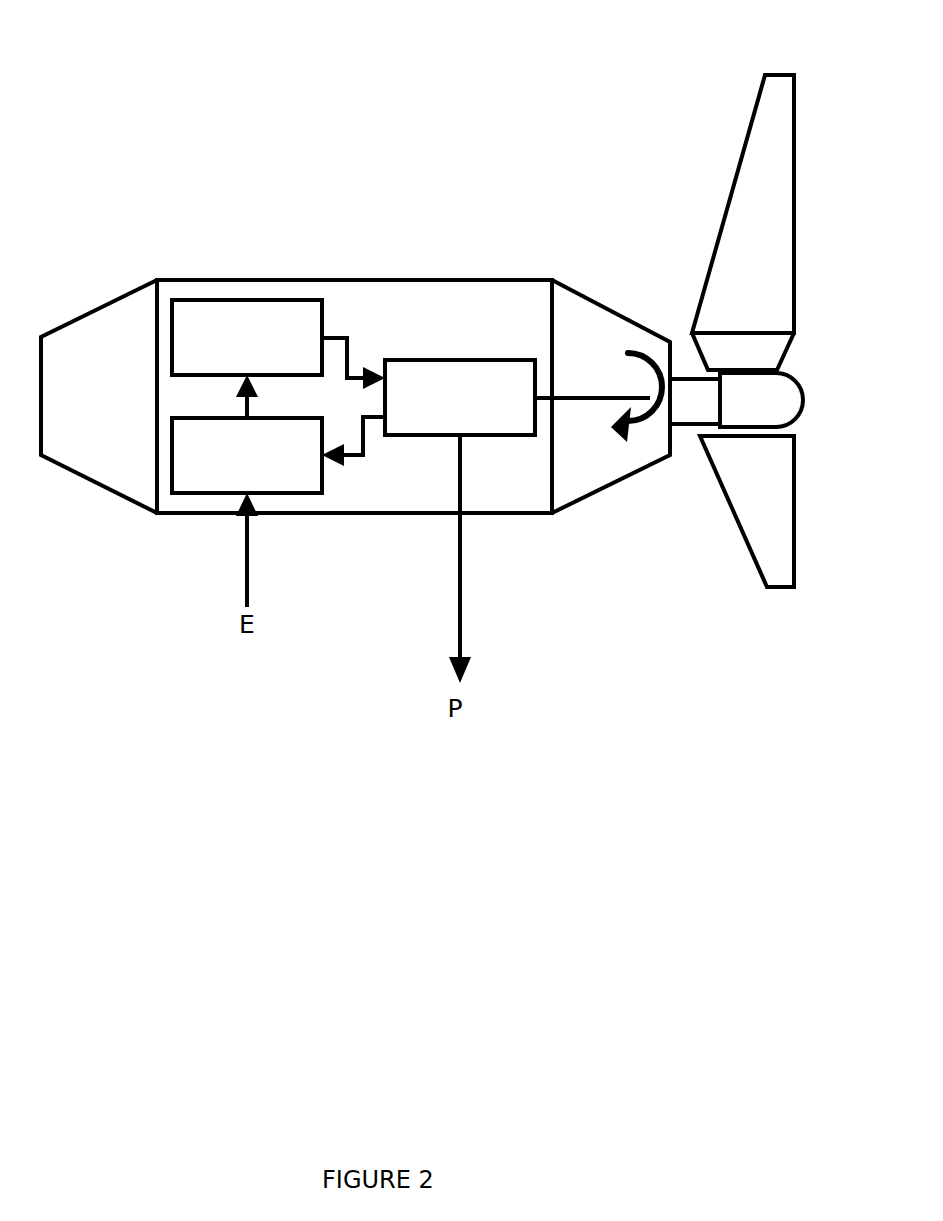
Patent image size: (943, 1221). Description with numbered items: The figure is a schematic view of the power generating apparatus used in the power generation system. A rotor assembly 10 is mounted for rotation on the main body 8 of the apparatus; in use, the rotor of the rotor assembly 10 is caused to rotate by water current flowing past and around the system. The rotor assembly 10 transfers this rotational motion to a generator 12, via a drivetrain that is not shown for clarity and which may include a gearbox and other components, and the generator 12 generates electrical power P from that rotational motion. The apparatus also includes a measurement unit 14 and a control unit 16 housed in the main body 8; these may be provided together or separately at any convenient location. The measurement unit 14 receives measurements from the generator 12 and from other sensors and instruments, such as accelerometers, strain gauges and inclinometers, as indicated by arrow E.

The main body 8 is at (390, 313).
The rotor assembly 10 is at (757, 163).
The generator 12 is at (483, 397).
The measurement unit 14 is at (222, 458).
The control unit 16 is at (235, 347).